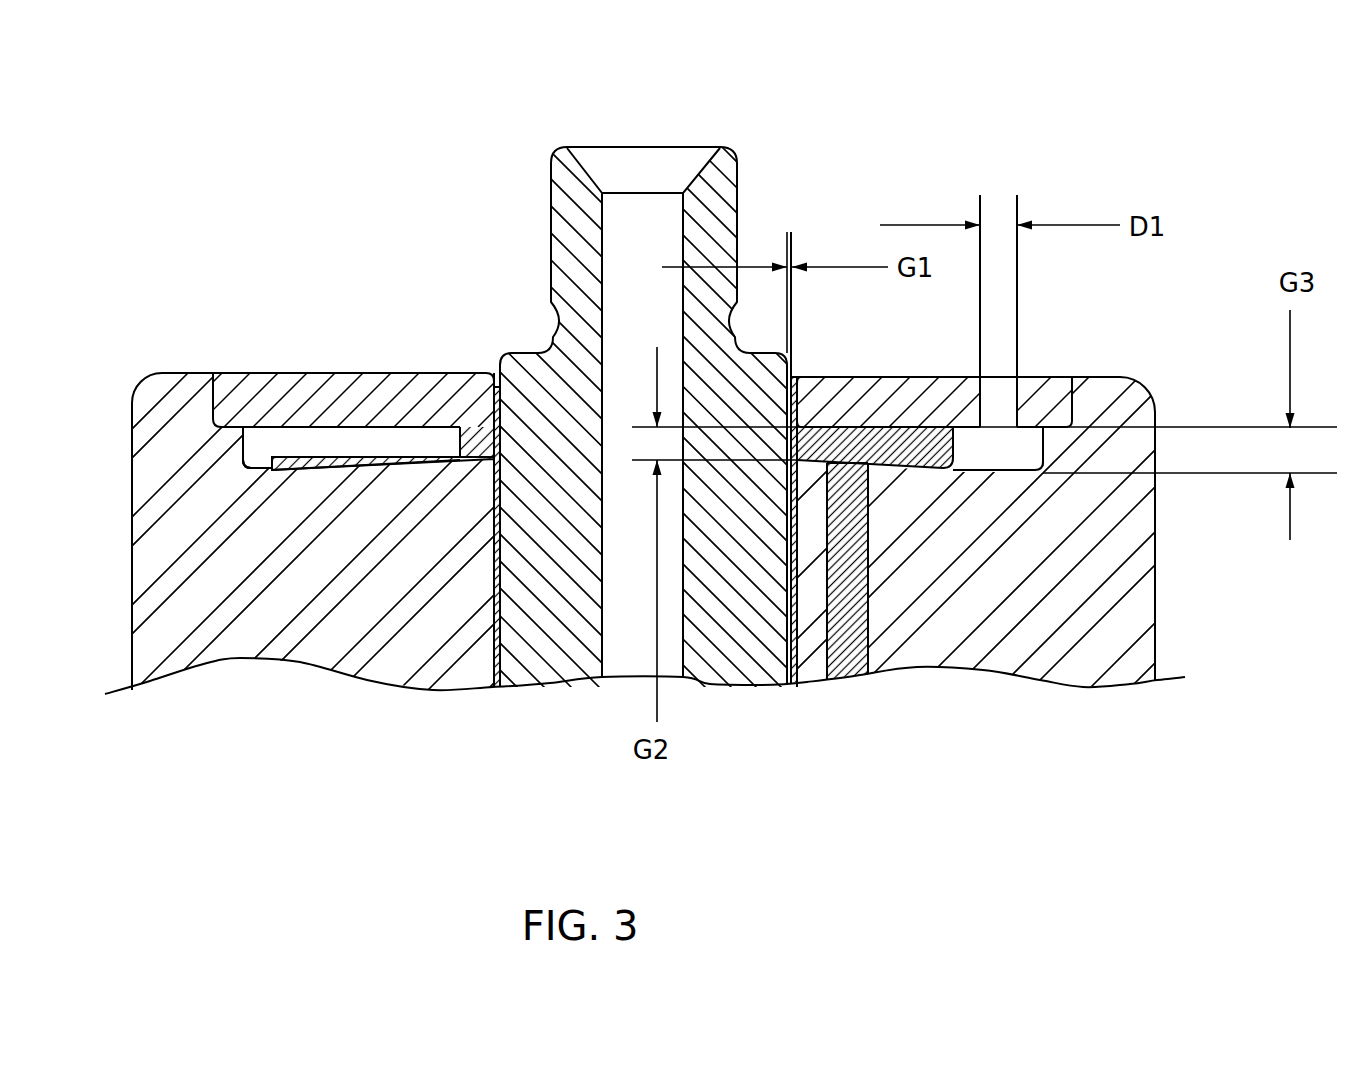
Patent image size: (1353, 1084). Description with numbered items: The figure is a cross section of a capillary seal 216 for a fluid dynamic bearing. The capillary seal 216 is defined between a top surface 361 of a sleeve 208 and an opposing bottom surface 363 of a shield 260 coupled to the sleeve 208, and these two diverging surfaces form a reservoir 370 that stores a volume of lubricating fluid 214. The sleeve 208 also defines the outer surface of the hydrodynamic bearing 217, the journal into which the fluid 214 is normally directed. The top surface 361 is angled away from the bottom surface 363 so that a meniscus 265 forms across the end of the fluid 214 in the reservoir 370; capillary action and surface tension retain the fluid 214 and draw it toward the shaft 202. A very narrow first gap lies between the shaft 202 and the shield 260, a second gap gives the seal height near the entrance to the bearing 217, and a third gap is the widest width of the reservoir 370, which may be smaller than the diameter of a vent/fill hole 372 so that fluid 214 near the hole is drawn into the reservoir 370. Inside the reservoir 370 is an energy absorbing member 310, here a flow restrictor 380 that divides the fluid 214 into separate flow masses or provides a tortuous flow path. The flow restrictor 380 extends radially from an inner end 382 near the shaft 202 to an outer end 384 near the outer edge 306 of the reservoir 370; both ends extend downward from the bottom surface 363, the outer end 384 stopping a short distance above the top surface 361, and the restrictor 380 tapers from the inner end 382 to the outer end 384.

The shaft 202 is at (742, 196).
The capillary seal 216 is at (82, 385).
The energy absorbing member 310 is at (377, 432).
The flow restrictor 380 is at (331, 440).
The outer end 384 is at (285, 443).
The inner end 382 is at (448, 440).
The outer edge 306 is at (243, 447).
The shield 260 is at (842, 377).
The bottom surface 363 is at (883, 430).
The reservoir 370 is at (927, 438).
The vent/fill hole 372 is at (1005, 373).
The meniscus 265 is at (953, 447).
The lubricating fluid 214 is at (858, 445).
The hydrodynamic bearing 217 is at (790, 689).
The top surface 361 is at (935, 463).
The sleeve 208 is at (1057, 647).